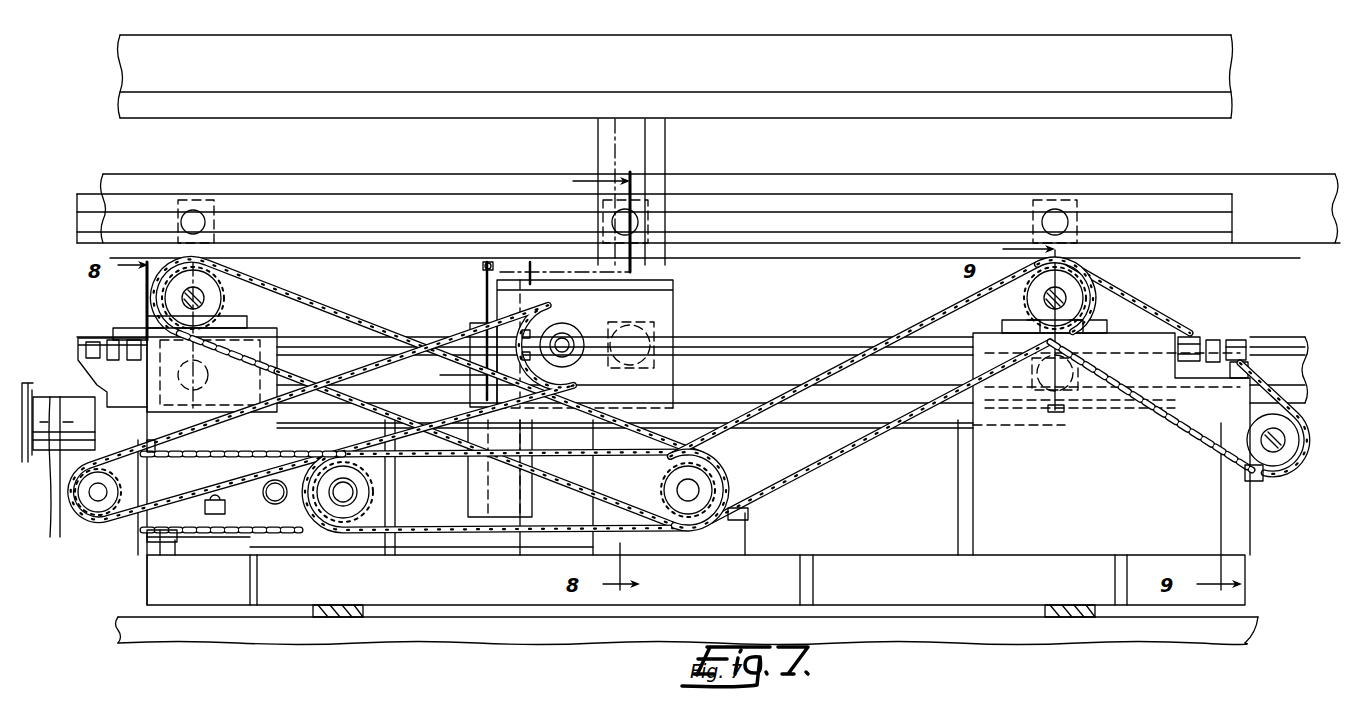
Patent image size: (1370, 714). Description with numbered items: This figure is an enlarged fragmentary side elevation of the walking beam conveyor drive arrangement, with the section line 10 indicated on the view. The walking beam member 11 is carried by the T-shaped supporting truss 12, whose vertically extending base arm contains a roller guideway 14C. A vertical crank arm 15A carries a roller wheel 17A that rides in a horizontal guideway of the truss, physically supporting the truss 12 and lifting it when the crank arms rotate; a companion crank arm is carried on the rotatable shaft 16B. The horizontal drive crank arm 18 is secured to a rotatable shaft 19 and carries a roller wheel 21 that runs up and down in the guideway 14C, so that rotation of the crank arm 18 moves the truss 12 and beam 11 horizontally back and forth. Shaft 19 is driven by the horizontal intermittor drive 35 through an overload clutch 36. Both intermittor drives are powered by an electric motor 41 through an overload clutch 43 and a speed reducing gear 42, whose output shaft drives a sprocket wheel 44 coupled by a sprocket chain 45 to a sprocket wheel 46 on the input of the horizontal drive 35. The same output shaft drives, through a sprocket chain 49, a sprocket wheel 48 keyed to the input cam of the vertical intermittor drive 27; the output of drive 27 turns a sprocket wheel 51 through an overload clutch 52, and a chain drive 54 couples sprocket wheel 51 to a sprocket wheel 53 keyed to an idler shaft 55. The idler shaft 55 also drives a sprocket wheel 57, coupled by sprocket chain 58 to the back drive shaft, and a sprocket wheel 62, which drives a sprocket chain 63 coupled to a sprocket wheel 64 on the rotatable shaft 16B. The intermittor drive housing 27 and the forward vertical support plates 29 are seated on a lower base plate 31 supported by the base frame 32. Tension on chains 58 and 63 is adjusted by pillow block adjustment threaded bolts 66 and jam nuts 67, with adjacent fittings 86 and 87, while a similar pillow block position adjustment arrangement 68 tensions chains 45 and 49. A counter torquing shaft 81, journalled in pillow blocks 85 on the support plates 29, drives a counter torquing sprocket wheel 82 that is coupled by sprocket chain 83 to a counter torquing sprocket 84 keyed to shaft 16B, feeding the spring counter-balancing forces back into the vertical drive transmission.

The storage and retrieval apparatus / section line 10 is at (516, 271).
The walking beam member 11 is at (323, 36).
The T-shaped supporting truss 12 is at (666, 148).
The roller guideway 14C is at (484, 267).
The crank arm 15A is at (160, 302).
The rotatable shaft 16B is at (1022, 300).
The roller wheel 17A is at (165, 380).
The crank arm 18 is at (686, 272).
The rotatable shaft 19 is at (638, 350).
The roller wheel 21 is at (612, 228).
The vertical intermittor drive means 27 is at (366, 545).
The forward vertical support plates 29 is at (1020, 480).
The lower base plate 31 is at (1023, 555).
The base frame 32 is at (483, 632).
The horizontal intermittor drive means 35 is at (619, 334).
The overload clutch 36 is at (690, 304).
The electric motor 41 is at (32, 389).
The speed reducing gear 42 is at (70, 537).
The overload clutch 43 is at (74, 404).
The sprocket wheel 44 is at (96, 525).
The sprocket chain 45 is at (347, 377).
The sprocket wheel 46 is at (545, 306).
The sprocket wheel 48 is at (270, 531).
The sprocket chain 49 is at (228, 454).
The sprocket wheel 51 is at (360, 484).
The overload clutch 52 is at (368, 491).
The sprocket wheel 53 is at (881, 435).
The chain drive 54 is at (440, 530).
The idler shaft 55 is at (700, 478).
The sprocket wheel 57 is at (881, 435).
The sprocket chain 58 is at (427, 392).
The sprocket wheel 62 is at (748, 512).
The sprocket chain 63 is at (912, 330).
The sprocket wheel 64 is at (1127, 297).
The pillow block adjustment threaded bolts 66 is at (1213, 340).
The jam nuts 67 is at (1190, 337).
The pillow block position adjustment arrangement 68 is at (150, 440).
The counter torquing shaft 81 is at (1302, 452).
The counter torquing sprocket wheel 82 is at (1295, 418).
The sprocket chain 83 is at (1094, 278).
The counter torquing sprocket 84 is at (1127, 297).
The pillow blocks 85 is at (1268, 482).
The adjusting nut 86 is at (1237, 340).
The clevis 87 is at (1246, 365).